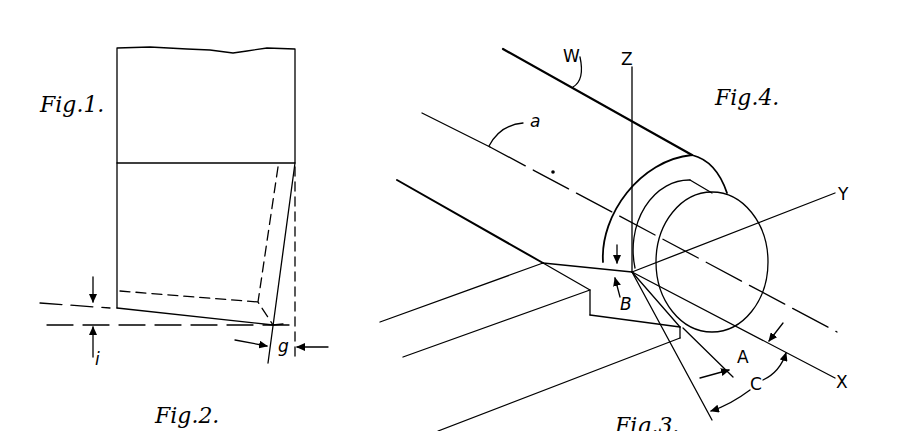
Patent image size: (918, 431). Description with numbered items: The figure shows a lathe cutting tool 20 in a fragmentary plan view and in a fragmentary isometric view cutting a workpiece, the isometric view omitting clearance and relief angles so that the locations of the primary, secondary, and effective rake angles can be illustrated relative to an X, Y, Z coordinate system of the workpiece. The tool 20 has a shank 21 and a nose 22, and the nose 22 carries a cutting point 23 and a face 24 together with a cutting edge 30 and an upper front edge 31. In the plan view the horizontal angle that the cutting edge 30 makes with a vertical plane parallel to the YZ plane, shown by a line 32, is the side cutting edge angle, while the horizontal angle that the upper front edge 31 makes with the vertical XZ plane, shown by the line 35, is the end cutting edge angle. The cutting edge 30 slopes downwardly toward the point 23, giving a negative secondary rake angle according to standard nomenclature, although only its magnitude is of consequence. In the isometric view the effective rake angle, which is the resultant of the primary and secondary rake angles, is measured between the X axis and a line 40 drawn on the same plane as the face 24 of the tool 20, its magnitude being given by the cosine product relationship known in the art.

In FIG. 1, the lathe cutting tool 20 is at (211, 206).
In FIG. 4, the lathe cutting tool 20 is at (556, 321).
In FIG. 1, the shank 21 is at (133, 133).
In FIG. 4, the shank 21 is at (490, 395).
In FIG. 1, the nose 22 is at (211, 264).
In FIG. 4, the nose 22 is at (638, 316).
In FIG. 1, the cutting point 23 is at (283, 323).
In FIG. 1, the face 24 is at (262, 213).
In FIG. 4, the face 24 is at (605, 312).
In FIG. 1, the cutting edge 30 is at (283, 253).
In FIG. 4, the cutting edge 30 is at (580, 262).
In FIG. 1, the upper front edge 31 is at (180, 315).
In FIG. 4, the upper front edge 31 is at (655, 289).
In FIG. 1, the line showing vertical plane parallel to YZ plane 32 is at (298, 282).
In FIG. 1, the line showing vertical plane XZ 35 is at (65, 328).
In FIG. 4, the line drawn on the plane of the face 40 is at (702, 398).